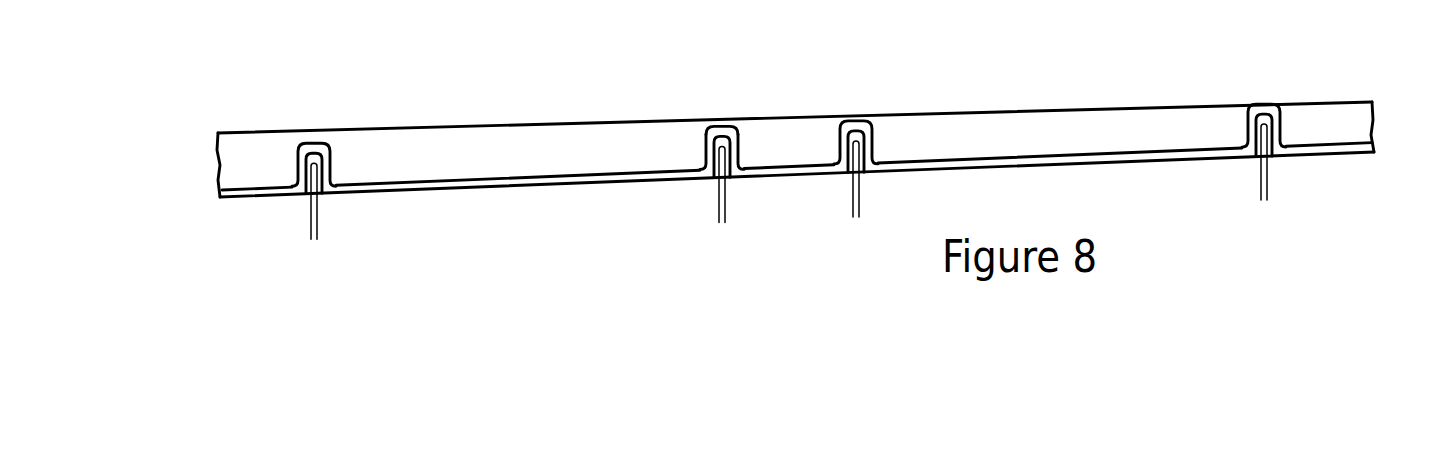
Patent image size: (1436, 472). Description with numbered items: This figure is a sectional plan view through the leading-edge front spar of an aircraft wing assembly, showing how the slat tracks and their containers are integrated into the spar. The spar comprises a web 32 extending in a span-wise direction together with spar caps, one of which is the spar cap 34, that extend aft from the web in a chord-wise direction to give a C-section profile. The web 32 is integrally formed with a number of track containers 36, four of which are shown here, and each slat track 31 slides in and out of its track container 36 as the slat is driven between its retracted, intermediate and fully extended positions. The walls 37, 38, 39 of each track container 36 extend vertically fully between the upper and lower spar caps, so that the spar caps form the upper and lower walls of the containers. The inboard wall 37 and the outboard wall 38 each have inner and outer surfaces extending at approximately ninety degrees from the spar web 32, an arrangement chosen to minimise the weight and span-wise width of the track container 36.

The slat track 31 is at (717, 202).
The spar web 32 is at (517, 185).
The spar cap 34 is at (980, 138).
The track container 36 is at (722, 149).
The inboard wall 37 is at (708, 150).
The outboard wall 38 is at (738, 150).
The wall 39 is at (717, 122).